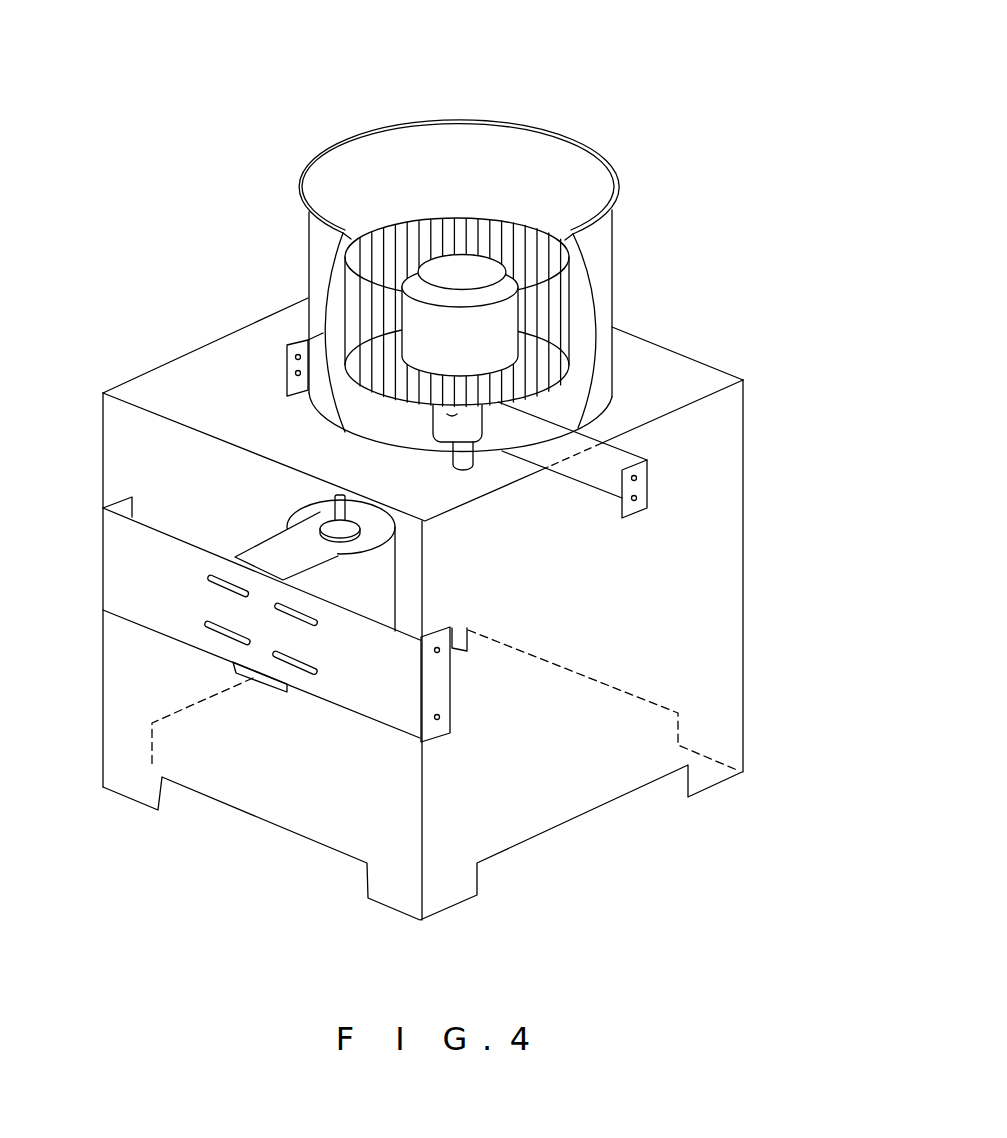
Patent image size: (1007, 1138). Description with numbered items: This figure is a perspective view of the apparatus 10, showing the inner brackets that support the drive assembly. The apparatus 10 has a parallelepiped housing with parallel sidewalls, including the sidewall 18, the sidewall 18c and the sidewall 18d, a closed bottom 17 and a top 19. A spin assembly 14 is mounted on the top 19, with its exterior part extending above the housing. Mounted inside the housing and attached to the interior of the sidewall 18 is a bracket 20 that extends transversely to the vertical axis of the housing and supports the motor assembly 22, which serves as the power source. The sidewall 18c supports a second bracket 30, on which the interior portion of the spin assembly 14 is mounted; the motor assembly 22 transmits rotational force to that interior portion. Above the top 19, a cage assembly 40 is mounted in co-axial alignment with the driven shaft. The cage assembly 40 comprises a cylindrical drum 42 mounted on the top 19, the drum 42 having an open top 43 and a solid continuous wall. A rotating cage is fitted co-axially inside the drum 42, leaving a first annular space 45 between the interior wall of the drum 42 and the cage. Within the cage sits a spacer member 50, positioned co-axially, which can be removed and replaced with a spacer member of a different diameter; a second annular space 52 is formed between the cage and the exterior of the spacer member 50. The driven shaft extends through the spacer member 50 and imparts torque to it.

The apparatus 10 is at (575, 93).
The spin assembly 14 is at (300, 183).
The closed bottom 17 is at (567, 800).
The sidewall 18 is at (120, 445).
The sidewall 18c is at (697, 355).
The sidewall 18d is at (718, 513).
The top 19 is at (240, 395).
The bracket 20 is at (120, 582).
The motor assembly 22 is at (302, 507).
The second bracket 30 is at (622, 467).
The cage assembly 40 is at (620, 225).
The cylindrical drum 42 is at (590, 257).
The open top 43 is at (455, 122).
The first annular space 45 is at (375, 173).
The spacer member 50 is at (460, 267).
The second annular space 52 is at (537, 347).